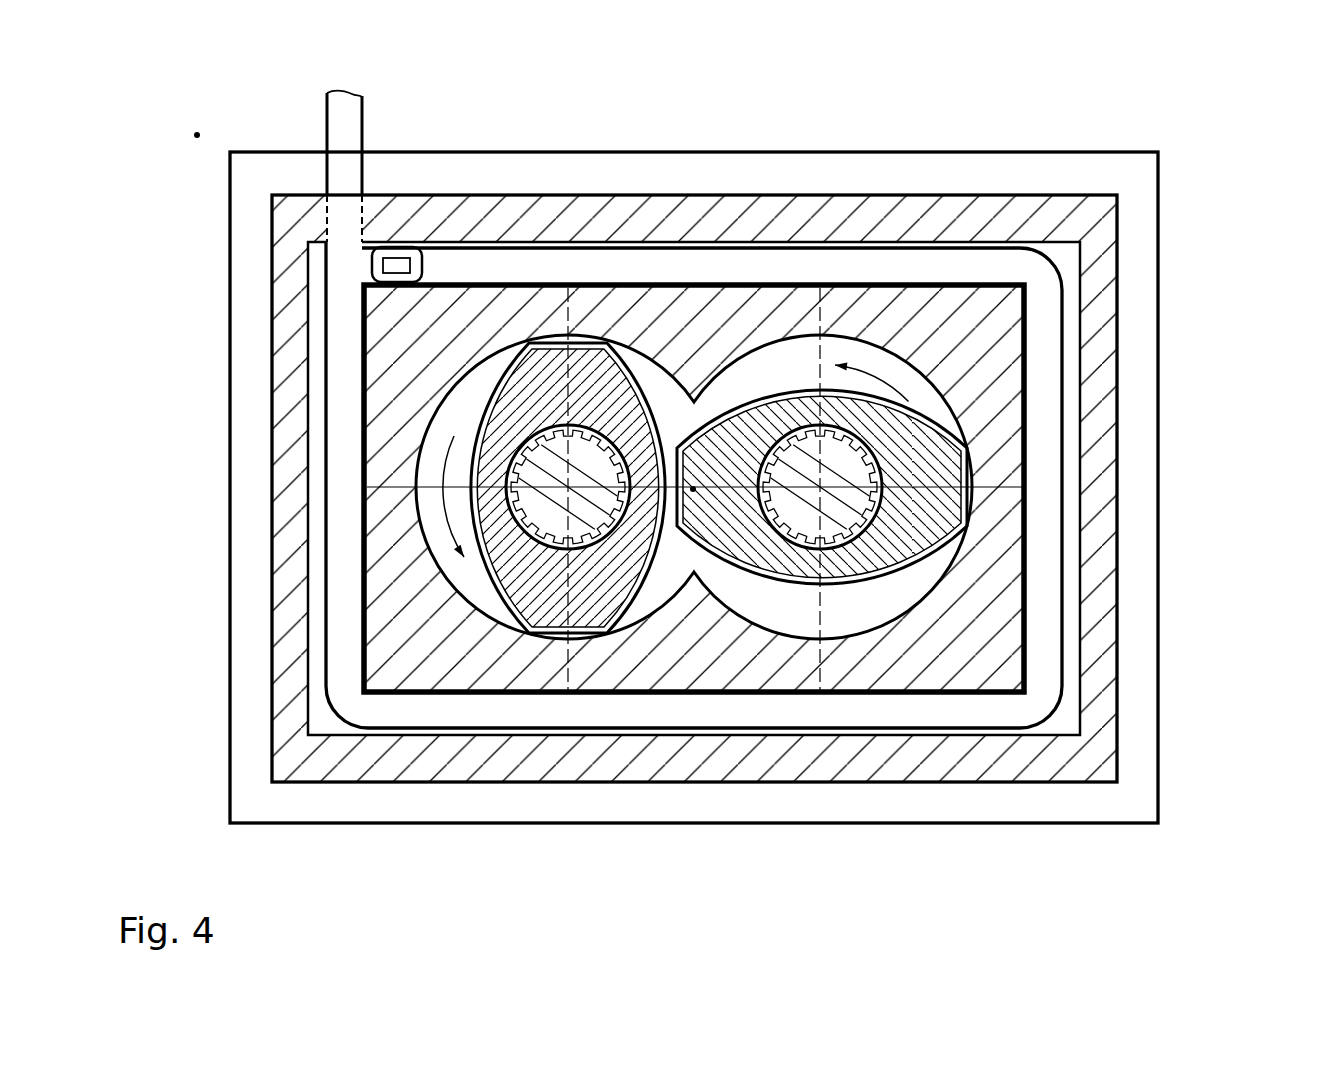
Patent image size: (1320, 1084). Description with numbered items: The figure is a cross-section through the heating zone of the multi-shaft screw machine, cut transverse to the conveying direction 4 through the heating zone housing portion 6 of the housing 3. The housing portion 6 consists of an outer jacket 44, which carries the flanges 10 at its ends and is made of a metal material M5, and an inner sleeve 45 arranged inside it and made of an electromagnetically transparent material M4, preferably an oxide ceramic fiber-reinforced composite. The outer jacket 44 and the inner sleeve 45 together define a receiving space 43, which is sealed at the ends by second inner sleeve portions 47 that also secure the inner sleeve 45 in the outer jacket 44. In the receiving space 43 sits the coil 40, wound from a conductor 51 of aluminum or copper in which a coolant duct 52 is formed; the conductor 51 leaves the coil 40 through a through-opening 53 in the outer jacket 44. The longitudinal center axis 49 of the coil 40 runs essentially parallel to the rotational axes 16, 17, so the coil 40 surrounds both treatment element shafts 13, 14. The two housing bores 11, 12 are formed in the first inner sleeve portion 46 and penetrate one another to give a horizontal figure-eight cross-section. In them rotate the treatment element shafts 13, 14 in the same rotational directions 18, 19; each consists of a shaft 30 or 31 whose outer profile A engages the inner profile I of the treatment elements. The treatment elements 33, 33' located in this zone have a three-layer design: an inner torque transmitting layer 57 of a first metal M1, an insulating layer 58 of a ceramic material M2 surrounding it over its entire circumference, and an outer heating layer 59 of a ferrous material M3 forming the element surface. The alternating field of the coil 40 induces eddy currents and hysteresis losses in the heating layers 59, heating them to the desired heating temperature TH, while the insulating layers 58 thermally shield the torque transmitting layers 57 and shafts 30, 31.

The housing 3 is at (720, 148).
The conveying direction 4 is at (197, 135).
The housing portion 6 is at (975, 192).
The flange 10 is at (1068, 158).
The housing bore 11 is at (428, 508).
The housing bore 12 is at (780, 352).
The treatment element shaft 13 is at (506, 368).
The treatment element shaft 14 is at (718, 410).
The rotational axis 16 is at (630, 580).
The rotational axis 17 is at (832, 545).
The rotational direction 18 is at (443, 468).
The rotational direction 19 is at (884, 368).
The first shaft 30 is at (497, 585).
The second shaft 31 is at (800, 530).
The treatment element 33 is at (579, 194).
The treatment element 33' is at (925, 228).
The coil 40 is at (338, 277).
The receiving space 43 is at (1073, 512).
The outer jacket 44 is at (1108, 445).
The inner sleeve 45 is at (982, 578).
The first inner sleeve portion 46 is at (1003, 653).
The second inner sleeve portion 47 is at (323, 715).
The longitudinal center axis 49 is at (693, 492).
The conductor 51 is at (332, 343).
The coolant duct 52 is at (398, 263).
The through-opening 53 is at (363, 197).
The torque transmitting layer 57 is at (540, 523).
The insulating layer 58 is at (553, 610).
The heating layer 59 is at (493, 413).
The outer profile A is at (566, 615).
The inner profile I is at (440, 657).
The heating temperature TH is at (812, 390).
The first metal M1 is at (868, 517).
The ceramic material M2 is at (940, 478).
The second metal material M3 is at (960, 417).
The electromagnetically transparent material M4 is at (1008, 370).
The metal material M5 is at (293, 765).